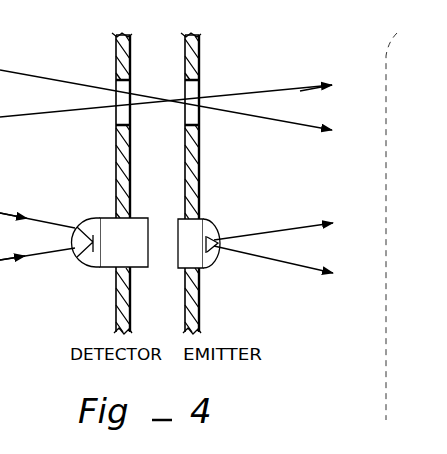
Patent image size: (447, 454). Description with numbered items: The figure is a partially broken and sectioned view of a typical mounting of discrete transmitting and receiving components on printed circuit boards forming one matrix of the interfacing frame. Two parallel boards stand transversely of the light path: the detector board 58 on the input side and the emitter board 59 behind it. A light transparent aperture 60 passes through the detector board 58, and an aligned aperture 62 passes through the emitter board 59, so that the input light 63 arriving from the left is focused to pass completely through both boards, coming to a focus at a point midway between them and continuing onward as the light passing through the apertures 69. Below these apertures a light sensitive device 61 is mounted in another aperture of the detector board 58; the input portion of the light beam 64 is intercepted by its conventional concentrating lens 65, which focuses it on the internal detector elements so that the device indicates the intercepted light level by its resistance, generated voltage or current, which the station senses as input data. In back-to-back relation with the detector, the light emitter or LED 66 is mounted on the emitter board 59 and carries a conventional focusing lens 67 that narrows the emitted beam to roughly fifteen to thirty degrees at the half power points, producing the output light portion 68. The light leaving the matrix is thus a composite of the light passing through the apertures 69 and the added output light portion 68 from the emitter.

The detector board 58 is at (118, 37).
The emitter board 59 is at (196, 37).
The light transparent aperture 60 is at (118, 118).
The light sensitive device 61 is at (110, 228).
The aperture 62 is at (197, 86).
The input light 63 is at (78, 78).
The input portion of the light beam 64 is at (32, 270).
The concentrating lens 65 is at (78, 266).
The light emitter or LED 66 is at (199, 230).
The focusing lens 67 is at (212, 262).
The output light portion 68 is at (310, 215).
The light passing through the apertures 69 is at (310, 80).